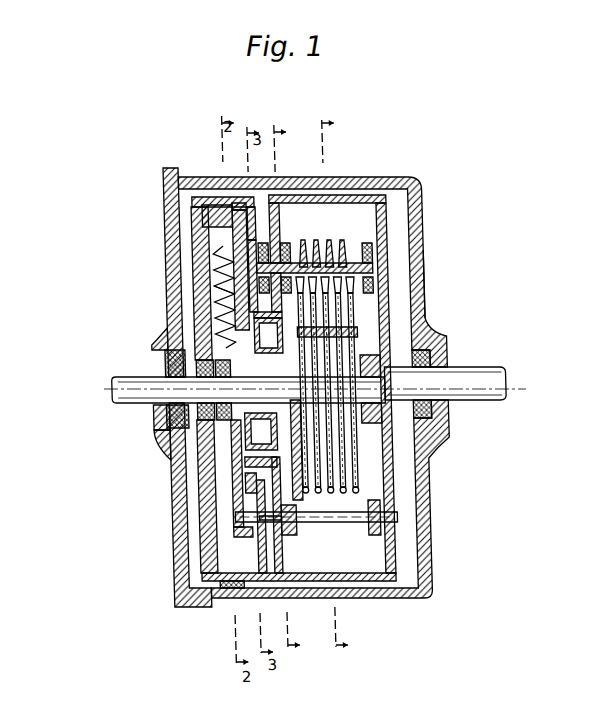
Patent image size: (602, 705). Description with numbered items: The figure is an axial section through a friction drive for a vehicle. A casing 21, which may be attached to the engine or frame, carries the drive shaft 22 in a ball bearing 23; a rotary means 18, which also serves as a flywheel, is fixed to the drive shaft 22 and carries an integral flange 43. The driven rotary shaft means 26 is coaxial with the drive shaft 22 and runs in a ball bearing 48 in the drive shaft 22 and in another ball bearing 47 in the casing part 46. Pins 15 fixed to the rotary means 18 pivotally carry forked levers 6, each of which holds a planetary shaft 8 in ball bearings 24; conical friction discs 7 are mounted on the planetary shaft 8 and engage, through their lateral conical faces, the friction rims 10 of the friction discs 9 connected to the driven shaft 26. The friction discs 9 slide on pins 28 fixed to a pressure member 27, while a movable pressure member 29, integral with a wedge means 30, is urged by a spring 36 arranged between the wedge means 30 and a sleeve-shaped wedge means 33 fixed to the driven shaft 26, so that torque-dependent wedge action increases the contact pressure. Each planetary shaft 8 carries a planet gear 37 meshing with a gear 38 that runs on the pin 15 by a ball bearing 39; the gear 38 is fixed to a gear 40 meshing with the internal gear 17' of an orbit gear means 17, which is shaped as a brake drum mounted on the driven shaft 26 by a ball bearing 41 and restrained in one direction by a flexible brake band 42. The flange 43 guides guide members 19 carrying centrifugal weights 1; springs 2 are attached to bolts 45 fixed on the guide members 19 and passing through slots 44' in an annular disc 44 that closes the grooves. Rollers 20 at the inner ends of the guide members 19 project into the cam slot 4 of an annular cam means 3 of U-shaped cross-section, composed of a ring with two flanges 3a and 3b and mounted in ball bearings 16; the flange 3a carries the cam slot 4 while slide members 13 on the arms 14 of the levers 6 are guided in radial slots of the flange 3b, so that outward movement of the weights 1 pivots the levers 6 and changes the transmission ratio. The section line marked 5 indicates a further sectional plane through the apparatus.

The weight 1 is at (254, 180).
The spring 2 is at (202, 290).
The annular cam means 3 is at (200, 333).
The flange 3a is at (273, 417).
The flange 3b is at (268, 335).
The cam slot 4 is at (289, 395).
The section line 5 is at (337, 393).
The forked lever 6 is at (350, 530).
The conical friction disc 7 is at (340, 257).
The planetary shaft 8 is at (374, 265).
The friction disc 9 is at (334, 460).
The friction rim 10 is at (336, 498).
The slide member 13 is at (265, 452).
The arm 14 is at (306, 520).
The pin 15 is at (388, 520).
The ball bearing 16 is at (186, 318).
The orbit gear means 17 is at (169, 505).
The internal gear 17' is at (276, 198).
The rotary means 18 is at (417, 463).
The guide member 19 is at (234, 203).
The roller 20 is at (145, 352).
The casing 21 is at (418, 299).
The drive shaft 22 is at (477, 378).
The ball bearing 23 is at (442, 347).
The ball bearing 24 is at (369, 280).
The driven rotary shaft means 26 is at (106, 398).
The pressure member 27 is at (355, 418).
The pin 28 is at (350, 333).
The movable pressure member 29 is at (299, 493).
The wedge means 30 is at (273, 430).
The sleeve-shaped wedge means 33 is at (160, 445).
The spring 36 is at (192, 457).
The planet gear 37 is at (271, 247).
The gear 38 is at (262, 550).
The ball bearing 39 is at (237, 543).
The gear 40 is at (252, 560).
The ball bearing 41 is at (143, 423).
The brake band 42 is at (205, 597).
The flange 43 is at (221, 215).
The annular disc 44 is at (160, 385).
The slot 44' is at (177, 256).
The bolt 45 is at (226, 260).
The casing part 46 is at (199, 208).
The ball bearing 47 is at (150, 410).
The ball bearing 48 is at (429, 405).